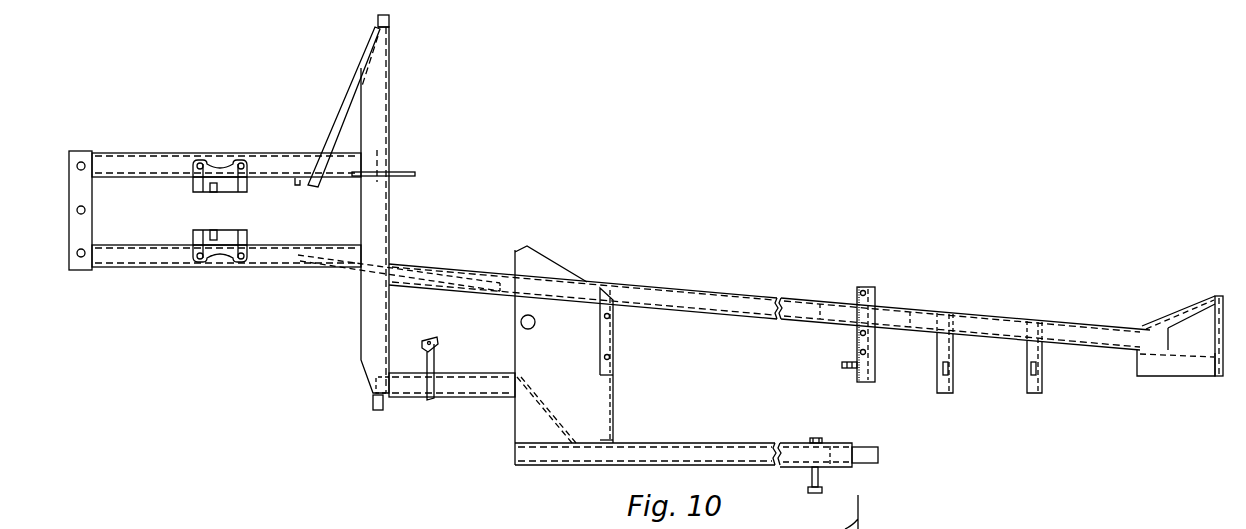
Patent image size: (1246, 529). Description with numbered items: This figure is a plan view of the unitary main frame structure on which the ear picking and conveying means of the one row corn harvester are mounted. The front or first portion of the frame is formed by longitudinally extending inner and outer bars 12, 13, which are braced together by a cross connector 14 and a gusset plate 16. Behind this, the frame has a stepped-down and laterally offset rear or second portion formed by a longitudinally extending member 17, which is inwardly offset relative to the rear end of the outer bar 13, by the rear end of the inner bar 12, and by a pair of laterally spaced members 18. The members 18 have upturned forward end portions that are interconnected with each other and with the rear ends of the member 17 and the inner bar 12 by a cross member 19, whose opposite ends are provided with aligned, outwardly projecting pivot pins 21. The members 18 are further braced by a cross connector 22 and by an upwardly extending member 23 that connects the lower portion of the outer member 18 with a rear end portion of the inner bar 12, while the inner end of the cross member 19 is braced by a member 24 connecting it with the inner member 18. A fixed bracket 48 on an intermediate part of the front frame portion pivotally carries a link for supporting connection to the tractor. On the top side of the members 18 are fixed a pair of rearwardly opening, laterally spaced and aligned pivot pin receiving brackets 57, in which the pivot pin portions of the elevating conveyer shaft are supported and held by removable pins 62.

The inner bar 12 is at (711, 297).
The outer bar 13 is at (722, 450).
The cross connector 14 is at (613, 398).
The gusset plate 16 is at (522, 419).
The longitudinally extending member 17 is at (475, 383).
The laterally spaced members 18 is at (161, 158).
The cross member 19 is at (383, 130).
The pivot pins 21 is at (378, 19).
The cross connector 22 is at (92, 196).
The upwardly extending member 23 is at (341, 266).
The brace member 24 is at (347, 108).
The fixed bracket 48 is at (842, 365).
The pivot pin receiving brackets 57 is at (247, 187).
The removable pins 62 is at (213, 193).